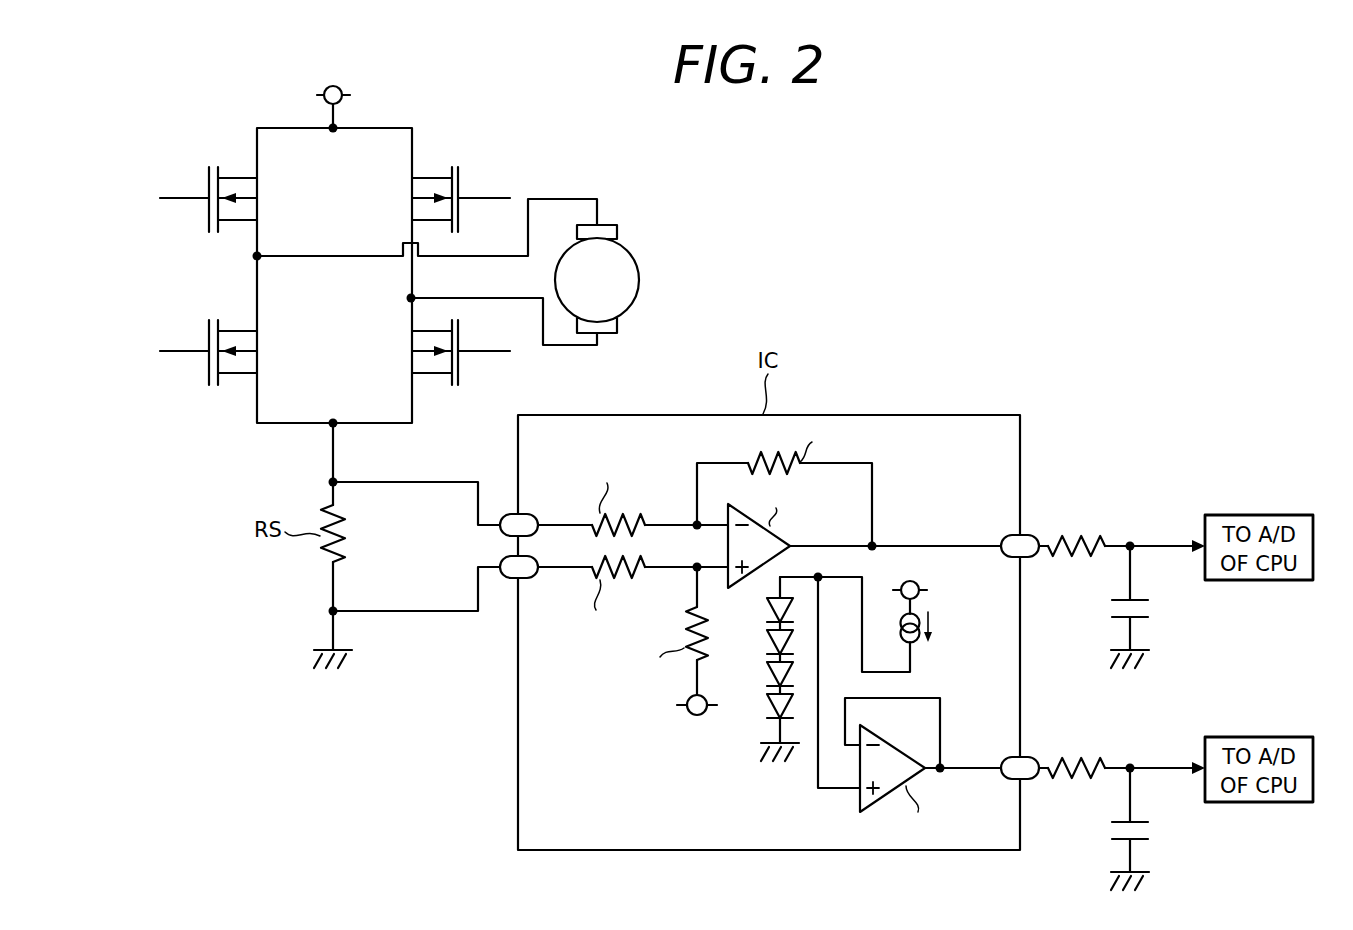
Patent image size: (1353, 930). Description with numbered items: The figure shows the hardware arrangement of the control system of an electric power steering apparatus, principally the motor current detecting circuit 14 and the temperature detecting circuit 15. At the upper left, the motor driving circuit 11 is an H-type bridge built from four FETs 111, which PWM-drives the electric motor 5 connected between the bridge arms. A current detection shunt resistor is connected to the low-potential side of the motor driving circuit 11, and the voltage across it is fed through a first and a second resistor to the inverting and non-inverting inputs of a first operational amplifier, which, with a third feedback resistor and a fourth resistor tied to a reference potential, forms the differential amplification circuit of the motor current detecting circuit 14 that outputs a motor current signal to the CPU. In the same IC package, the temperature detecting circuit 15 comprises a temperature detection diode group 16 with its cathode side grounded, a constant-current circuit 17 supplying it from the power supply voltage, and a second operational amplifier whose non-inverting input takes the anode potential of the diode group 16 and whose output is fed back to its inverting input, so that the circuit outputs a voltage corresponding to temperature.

The motor driving circuit 11 is at (423, 76).
The FETs 111 is at (432, 413).
The electric motor 5 is at (636, 262).
The motor current detecting circuit 14 is at (893, 470).
The temperature detecting circuit 15 is at (784, 778).
The temperature detection diode group 16 is at (765, 642).
The constant-current circuit 17 is at (936, 624).